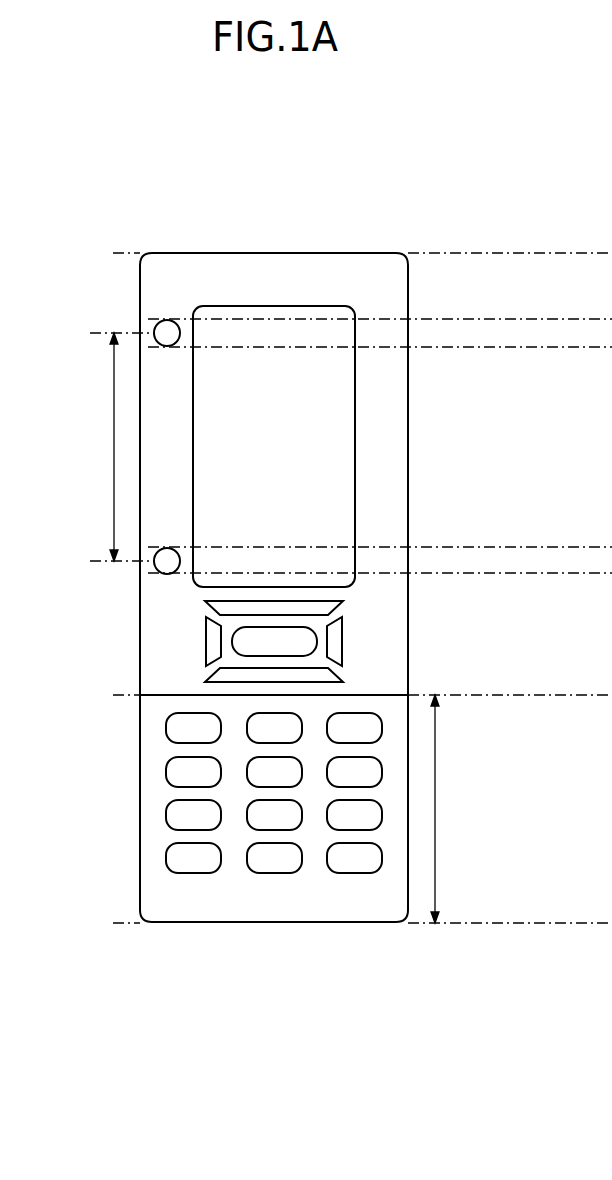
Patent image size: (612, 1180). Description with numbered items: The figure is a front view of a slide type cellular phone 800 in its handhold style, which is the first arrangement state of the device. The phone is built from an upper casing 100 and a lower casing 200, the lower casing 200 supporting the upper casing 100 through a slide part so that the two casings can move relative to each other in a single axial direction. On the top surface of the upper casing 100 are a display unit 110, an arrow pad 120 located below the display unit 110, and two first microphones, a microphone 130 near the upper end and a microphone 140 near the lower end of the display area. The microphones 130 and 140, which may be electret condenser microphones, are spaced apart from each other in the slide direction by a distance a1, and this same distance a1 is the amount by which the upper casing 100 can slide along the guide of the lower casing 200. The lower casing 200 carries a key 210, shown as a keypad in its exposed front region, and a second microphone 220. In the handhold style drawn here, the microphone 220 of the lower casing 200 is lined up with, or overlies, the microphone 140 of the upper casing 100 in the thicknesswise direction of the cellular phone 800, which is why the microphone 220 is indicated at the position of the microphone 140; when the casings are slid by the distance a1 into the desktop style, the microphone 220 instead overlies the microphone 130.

The cellular phone 800 is at (262, 172).
The upper casing 100 is at (368, 265).
The lower casing 200 is at (353, 897).
The display unit 110 is at (337, 430).
The arrow pad 120 is at (203, 594).
The microphone 130 is at (166, 322).
The microphone 140 is at (164, 567).
The key 210 is at (165, 707).
The microphone 220 is at (163, 552).
The distance a1 is at (114, 437).